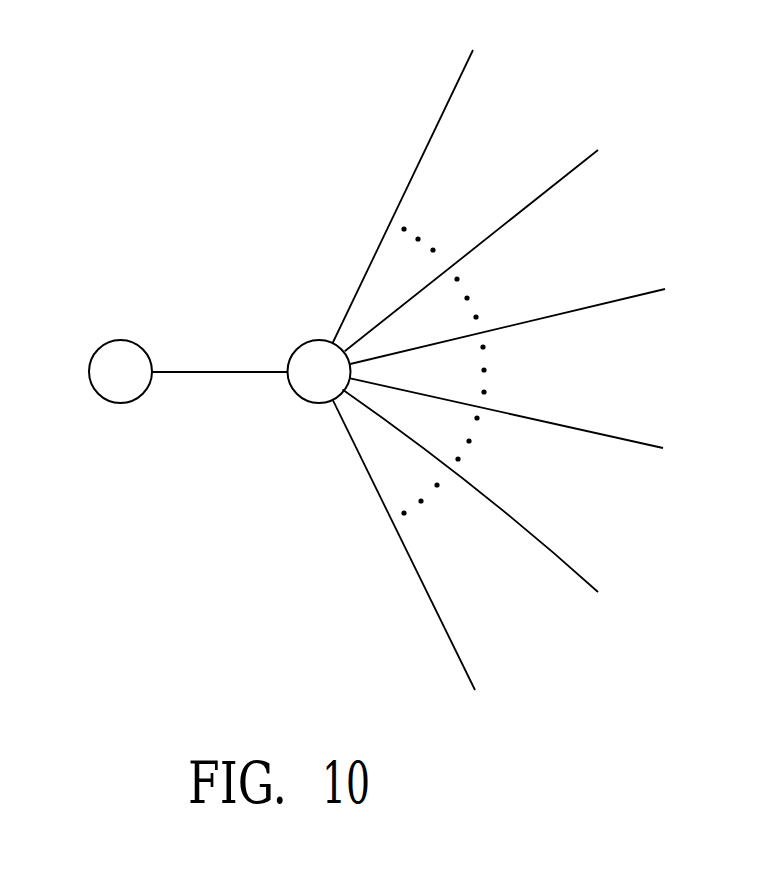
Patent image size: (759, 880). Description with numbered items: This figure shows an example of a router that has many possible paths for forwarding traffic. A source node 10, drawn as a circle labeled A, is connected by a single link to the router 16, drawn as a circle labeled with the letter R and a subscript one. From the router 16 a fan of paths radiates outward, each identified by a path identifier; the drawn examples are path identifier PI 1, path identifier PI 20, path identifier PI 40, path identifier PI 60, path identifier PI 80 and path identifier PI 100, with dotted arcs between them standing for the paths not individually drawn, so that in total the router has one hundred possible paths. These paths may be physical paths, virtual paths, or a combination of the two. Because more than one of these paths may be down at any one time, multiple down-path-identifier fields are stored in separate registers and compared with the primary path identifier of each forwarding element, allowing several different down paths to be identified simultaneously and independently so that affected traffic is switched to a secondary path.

The source node 10 is at (107, 340).
The router 16 is at (304, 340).
The path identifier PI1 1 is at (424, 175).
The path identifier PI20 20 is at (505, 230).
The path identifier PI40 40 is at (544, 315).
The path identifier PI60 60 is at (544, 430).
The path identifier PI80 80 is at (507, 517).
The path identifier PI100 100 is at (443, 572).